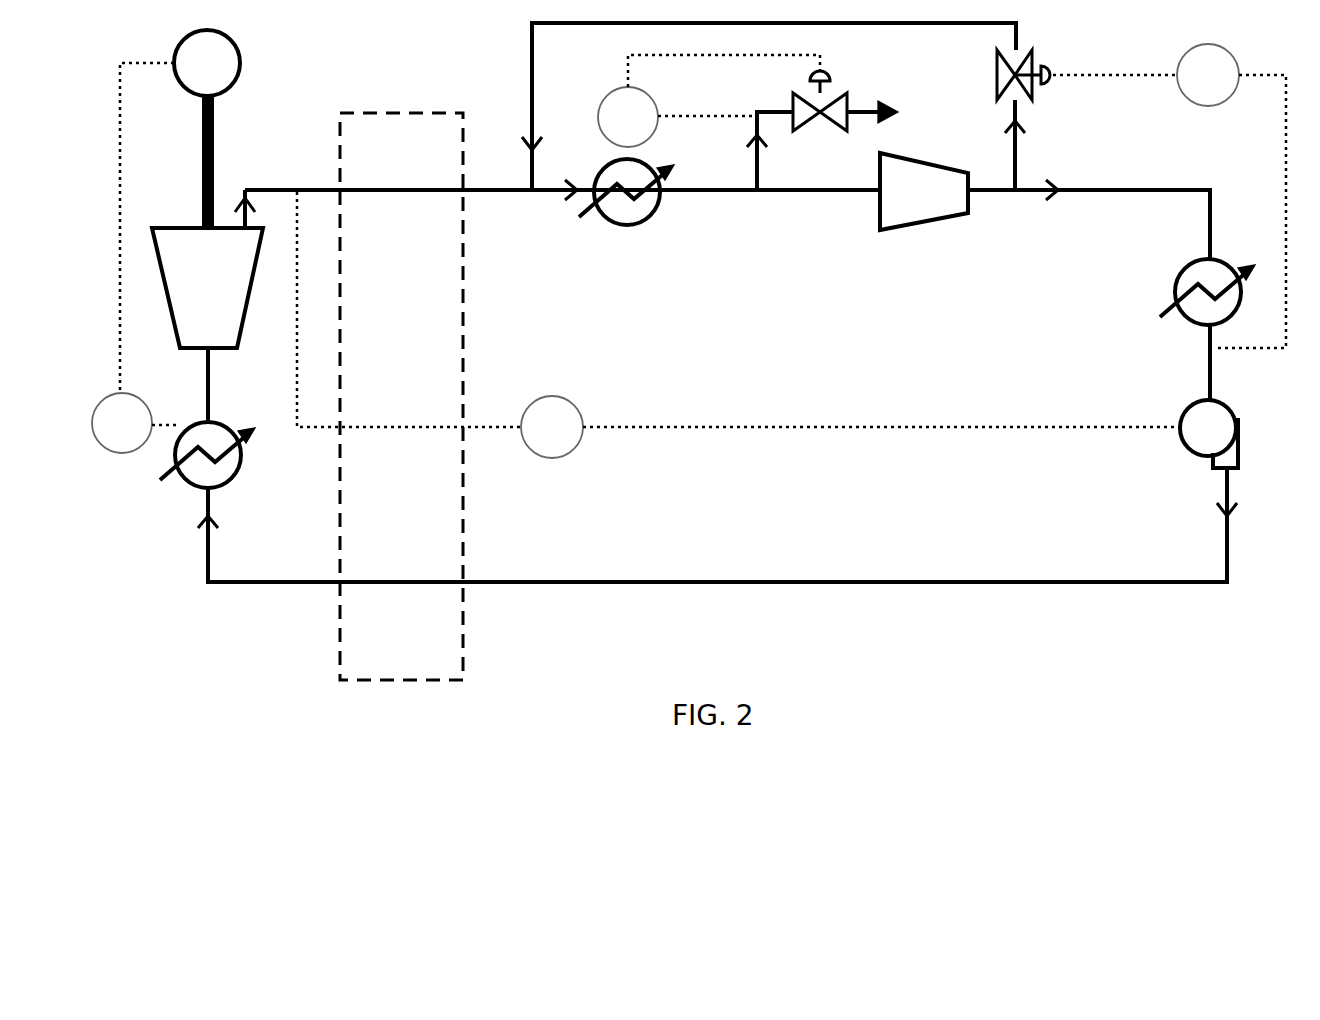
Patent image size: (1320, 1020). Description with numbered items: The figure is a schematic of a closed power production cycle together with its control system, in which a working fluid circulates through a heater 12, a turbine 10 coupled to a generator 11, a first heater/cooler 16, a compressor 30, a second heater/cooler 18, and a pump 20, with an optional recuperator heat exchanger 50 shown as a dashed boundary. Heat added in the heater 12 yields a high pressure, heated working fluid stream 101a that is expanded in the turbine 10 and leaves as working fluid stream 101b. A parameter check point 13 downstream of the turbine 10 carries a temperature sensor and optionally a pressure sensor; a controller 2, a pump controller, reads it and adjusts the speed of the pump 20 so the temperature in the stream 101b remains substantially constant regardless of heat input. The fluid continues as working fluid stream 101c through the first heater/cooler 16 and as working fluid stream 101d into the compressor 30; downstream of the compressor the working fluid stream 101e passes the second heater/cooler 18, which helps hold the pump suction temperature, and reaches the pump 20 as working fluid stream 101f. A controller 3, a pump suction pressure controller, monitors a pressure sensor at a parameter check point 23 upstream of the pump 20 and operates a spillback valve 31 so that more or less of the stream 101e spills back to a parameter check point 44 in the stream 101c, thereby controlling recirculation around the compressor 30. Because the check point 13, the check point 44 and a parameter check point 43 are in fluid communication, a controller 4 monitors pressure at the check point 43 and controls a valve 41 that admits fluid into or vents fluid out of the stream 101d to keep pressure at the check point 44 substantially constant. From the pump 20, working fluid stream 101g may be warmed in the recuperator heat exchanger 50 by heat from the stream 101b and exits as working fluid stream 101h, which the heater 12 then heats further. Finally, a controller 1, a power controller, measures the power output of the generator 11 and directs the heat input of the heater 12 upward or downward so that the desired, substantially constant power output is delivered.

The controller 1 is at (136, 258).
The controller 2 is at (738, 325).
The controller 3 is at (1169, 196).
The controller 4 is at (709, 101).
The turbine 10 is at (207, 288).
The generator 11 is at (207, 129).
The heater 12 is at (208, 462).
The parameter check point 13 is at (562, 179).
The first heater/cooler 16 is at (626, 205).
The second heater/cooler 18 is at (1198, 292).
The pump 20 is at (1209, 434).
The parameter check point 23 is at (1193, 362).
The compressor 30 is at (924, 191).
The spillback valve 31 is at (1013, 120).
The valve 41 is at (845, 110).
The parameter check point 43 is at (769, 140).
The parameter check point 44 is at (765, 124).
The recuperator heat exchanger 50 is at (401, 396).
The working fluid stream 101a is at (178, 385).
The working fluid stream 101b is at (247, 188).
The working fluid stream 101c is at (487, 193).
The working fluid stream 101d is at (770, 181).
The working fluid stream 101e is at (1089, 213).
The working fluid stream 101f is at (1215, 378).
The working fluid stream 101g is at (788, 525).
The working fluid stream 101h is at (269, 535).